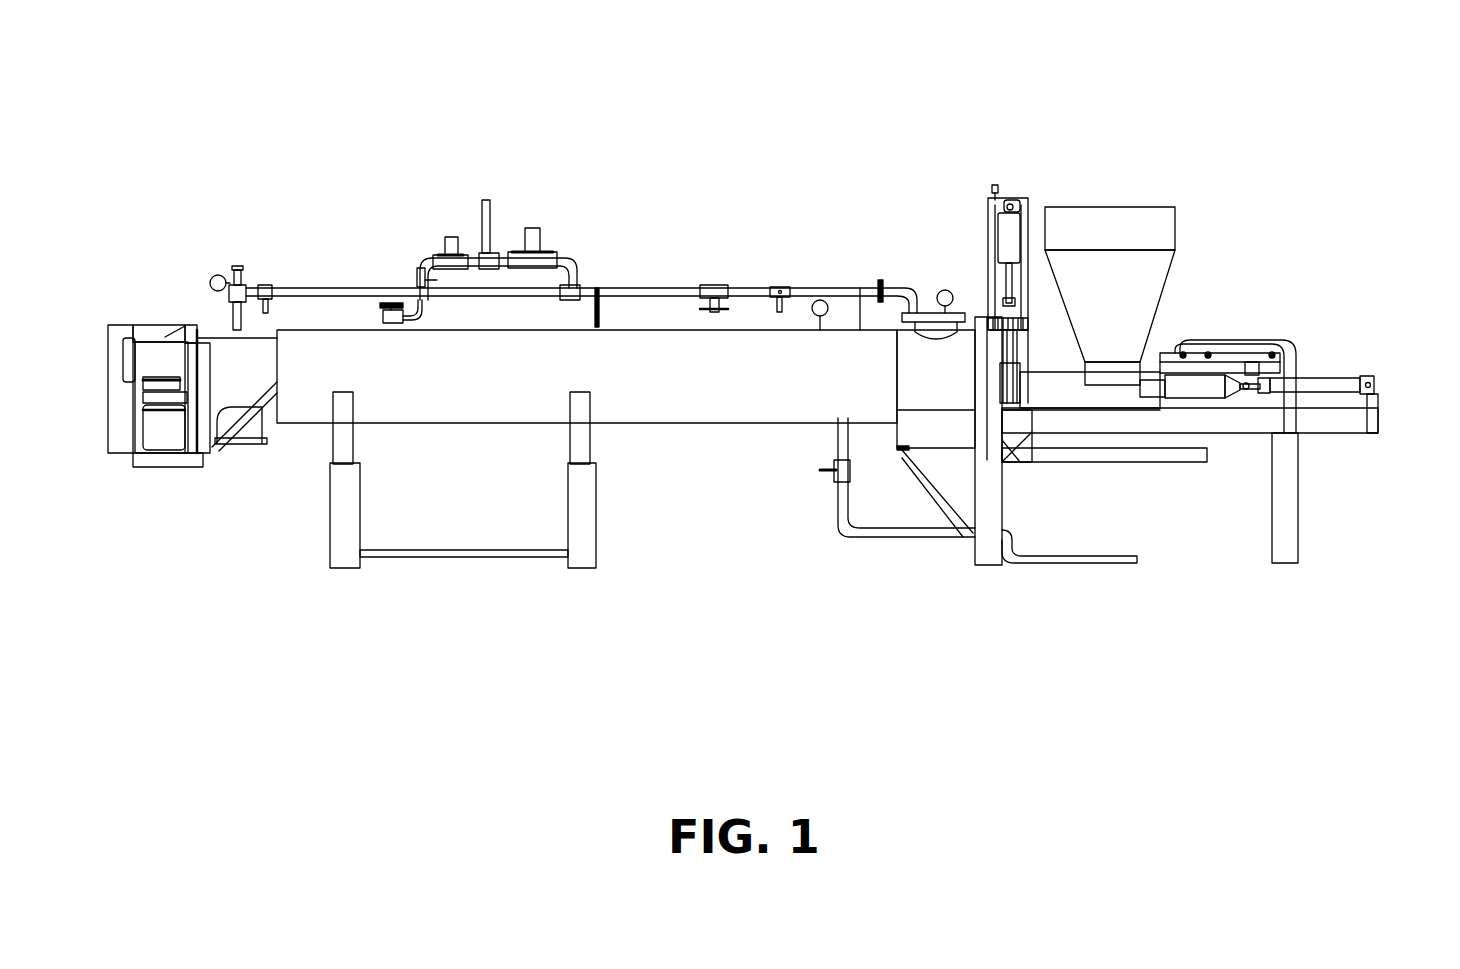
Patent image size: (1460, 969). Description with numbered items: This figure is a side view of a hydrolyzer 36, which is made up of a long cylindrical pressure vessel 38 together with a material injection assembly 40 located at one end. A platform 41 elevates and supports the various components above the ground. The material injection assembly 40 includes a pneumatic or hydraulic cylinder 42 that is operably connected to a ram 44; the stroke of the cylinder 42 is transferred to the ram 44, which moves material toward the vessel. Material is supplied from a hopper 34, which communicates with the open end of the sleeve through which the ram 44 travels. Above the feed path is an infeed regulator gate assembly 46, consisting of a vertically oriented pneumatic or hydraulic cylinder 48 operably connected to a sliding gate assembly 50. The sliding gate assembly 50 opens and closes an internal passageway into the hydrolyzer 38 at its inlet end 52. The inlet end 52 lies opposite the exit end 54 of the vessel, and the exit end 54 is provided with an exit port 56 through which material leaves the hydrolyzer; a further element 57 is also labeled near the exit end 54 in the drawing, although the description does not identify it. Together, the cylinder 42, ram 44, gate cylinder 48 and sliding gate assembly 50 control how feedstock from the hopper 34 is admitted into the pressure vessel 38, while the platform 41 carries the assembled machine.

The hopper 34 is at (1133, 208).
The hydrolyzer 36 is at (722, 195).
The cylindrical pressure vessel 38 is at (665, 340).
The material injection assembly 40 is at (1321, 358).
The platform 41 is at (985, 558).
The pneumatic or hydraulic cylinder 42 is at (1305, 390).
The ram 44 is at (1200, 395).
The infeed regulator gate assembly 46 is at (1014, 190).
The pneumatic or hydraulic cylinder 48 is at (1010, 240).
The sliding gate assembly 50 is at (1010, 405).
The inlet end 52 is at (983, 316).
The exit end 54 is at (195, 322).
The exit port 56 is at (240, 470).
The outlet elbow 57 is at (262, 445).